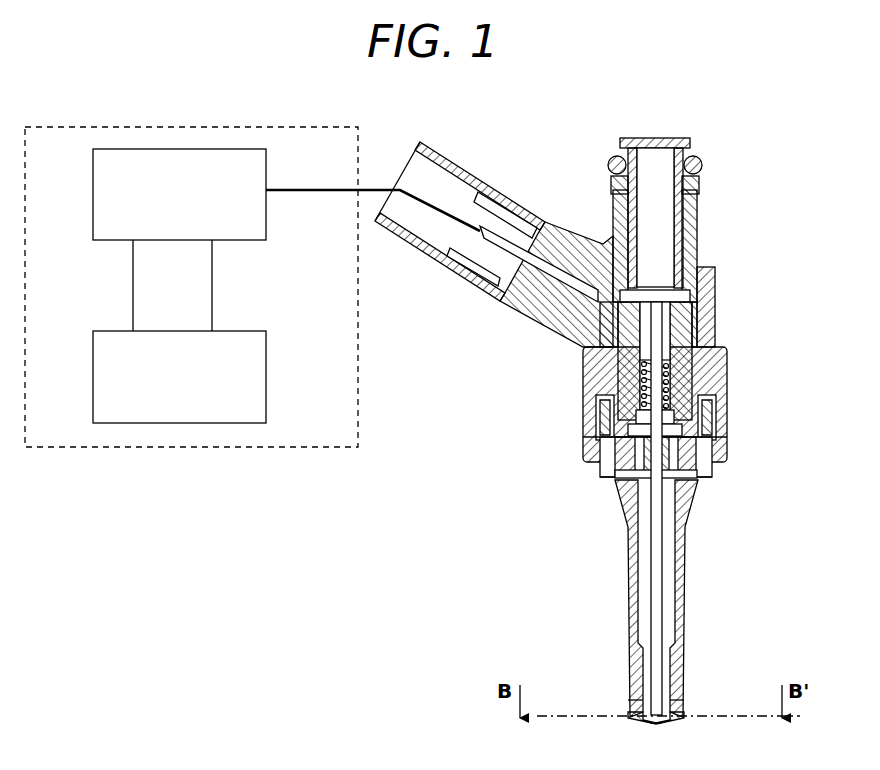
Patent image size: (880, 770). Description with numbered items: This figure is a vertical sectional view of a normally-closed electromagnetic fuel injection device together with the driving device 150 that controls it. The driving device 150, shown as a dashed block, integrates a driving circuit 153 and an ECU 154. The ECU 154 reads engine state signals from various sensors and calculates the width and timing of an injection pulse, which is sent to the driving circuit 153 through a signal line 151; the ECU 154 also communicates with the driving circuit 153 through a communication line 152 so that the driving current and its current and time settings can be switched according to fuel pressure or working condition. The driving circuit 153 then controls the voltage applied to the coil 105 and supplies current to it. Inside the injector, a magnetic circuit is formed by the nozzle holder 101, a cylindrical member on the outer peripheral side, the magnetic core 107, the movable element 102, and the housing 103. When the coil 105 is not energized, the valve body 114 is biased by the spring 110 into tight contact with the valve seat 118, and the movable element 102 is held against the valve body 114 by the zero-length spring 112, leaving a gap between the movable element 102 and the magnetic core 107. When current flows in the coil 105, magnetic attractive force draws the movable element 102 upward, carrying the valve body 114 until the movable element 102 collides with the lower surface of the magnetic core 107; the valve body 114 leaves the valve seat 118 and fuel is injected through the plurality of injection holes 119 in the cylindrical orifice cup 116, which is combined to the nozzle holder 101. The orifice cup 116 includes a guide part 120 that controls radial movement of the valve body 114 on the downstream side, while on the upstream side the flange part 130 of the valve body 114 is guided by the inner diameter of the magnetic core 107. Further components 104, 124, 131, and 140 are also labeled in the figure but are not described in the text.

The nozzle holder 101 is at (680, 634).
The movable element 102 is at (700, 470).
The housing 103 is at (727, 440).
The fixed core 104 is at (720, 422).
The coil 105 is at (727, 395).
The magnetic core 107 is at (700, 317).
The spring 110 is at (585, 343).
The zero-length spring 112 is at (615, 475).
The valve body 114 is at (653, 523).
The orifice cup 116 is at (630, 713).
The valve seat 118 is at (683, 712).
The injection holes 119 is at (660, 716).
The guide part 120 is at (630, 715).
The spring 124 is at (700, 270).
The flange part 130 is at (615, 440).
The fuel supply port 131 is at (660, 205).
The housing 140 is at (712, 337).
The driving device 150 is at (155, 447).
The signal line 151 is at (212, 301).
The communication line 152 is at (133, 300).
The driving circuit 153 is at (250, 198).
The ECU 154 is at (232, 390).